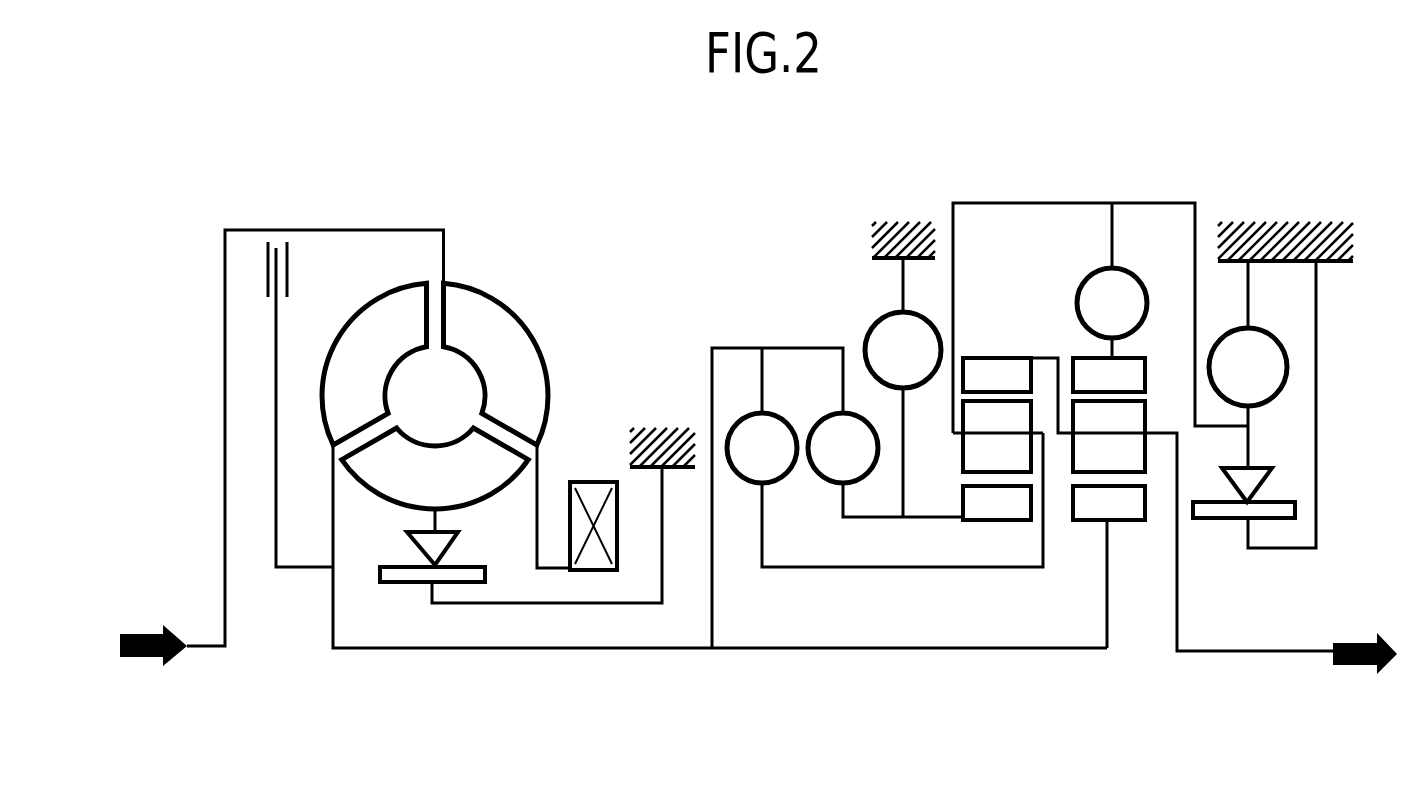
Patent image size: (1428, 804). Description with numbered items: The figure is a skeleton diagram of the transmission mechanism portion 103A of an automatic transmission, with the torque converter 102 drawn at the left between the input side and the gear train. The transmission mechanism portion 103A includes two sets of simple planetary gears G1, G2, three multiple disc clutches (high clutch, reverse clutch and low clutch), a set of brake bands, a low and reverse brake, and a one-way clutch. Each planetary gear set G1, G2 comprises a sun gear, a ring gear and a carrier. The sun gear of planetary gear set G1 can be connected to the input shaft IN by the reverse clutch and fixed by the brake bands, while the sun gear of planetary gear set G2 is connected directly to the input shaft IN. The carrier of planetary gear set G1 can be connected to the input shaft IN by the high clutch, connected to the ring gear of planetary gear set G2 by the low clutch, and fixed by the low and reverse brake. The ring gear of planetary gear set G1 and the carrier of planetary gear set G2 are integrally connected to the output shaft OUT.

The torque converter 102 is at (532, 248).
The transmission mechanism portion 103A is at (1152, 185).
The planetary gear set G1 is at (997, 423).
The planetary gear set G2 is at (1107, 503).
The input shaft IN is at (282, 462).
The output shaft OUT is at (1365, 668).